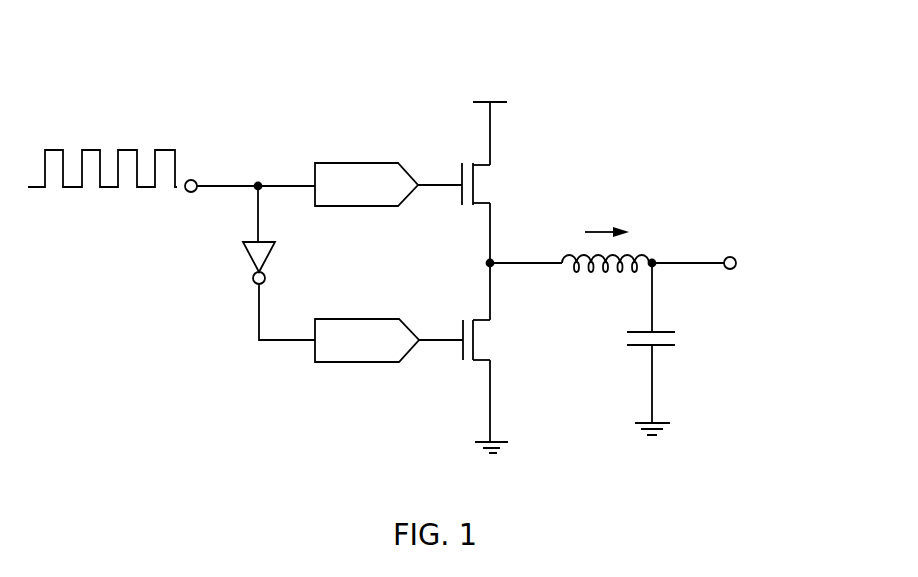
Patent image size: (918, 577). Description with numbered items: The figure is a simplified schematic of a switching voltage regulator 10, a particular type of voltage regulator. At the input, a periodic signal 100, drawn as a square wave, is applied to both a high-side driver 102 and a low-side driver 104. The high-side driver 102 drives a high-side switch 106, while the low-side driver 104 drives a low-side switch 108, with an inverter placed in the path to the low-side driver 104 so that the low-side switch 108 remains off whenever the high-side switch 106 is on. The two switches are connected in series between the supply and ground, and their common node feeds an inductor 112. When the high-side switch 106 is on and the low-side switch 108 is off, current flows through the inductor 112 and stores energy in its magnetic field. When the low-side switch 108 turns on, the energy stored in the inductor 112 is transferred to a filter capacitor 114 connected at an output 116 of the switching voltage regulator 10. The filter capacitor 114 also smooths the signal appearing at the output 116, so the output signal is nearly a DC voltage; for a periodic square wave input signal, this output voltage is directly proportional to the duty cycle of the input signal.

The switching voltage regulator 10 is at (626, 82).
The periodic signal 100 is at (107, 189).
The high-side driver 102 is at (367, 163).
The low-side driver 104 is at (367, 319).
The high-side switch 106 is at (489, 186).
The low-side switch 108 is at (493, 340).
The inductor 112 is at (608, 272).
The filter capacitor 114 is at (680, 339).
The output 116 is at (727, 256).